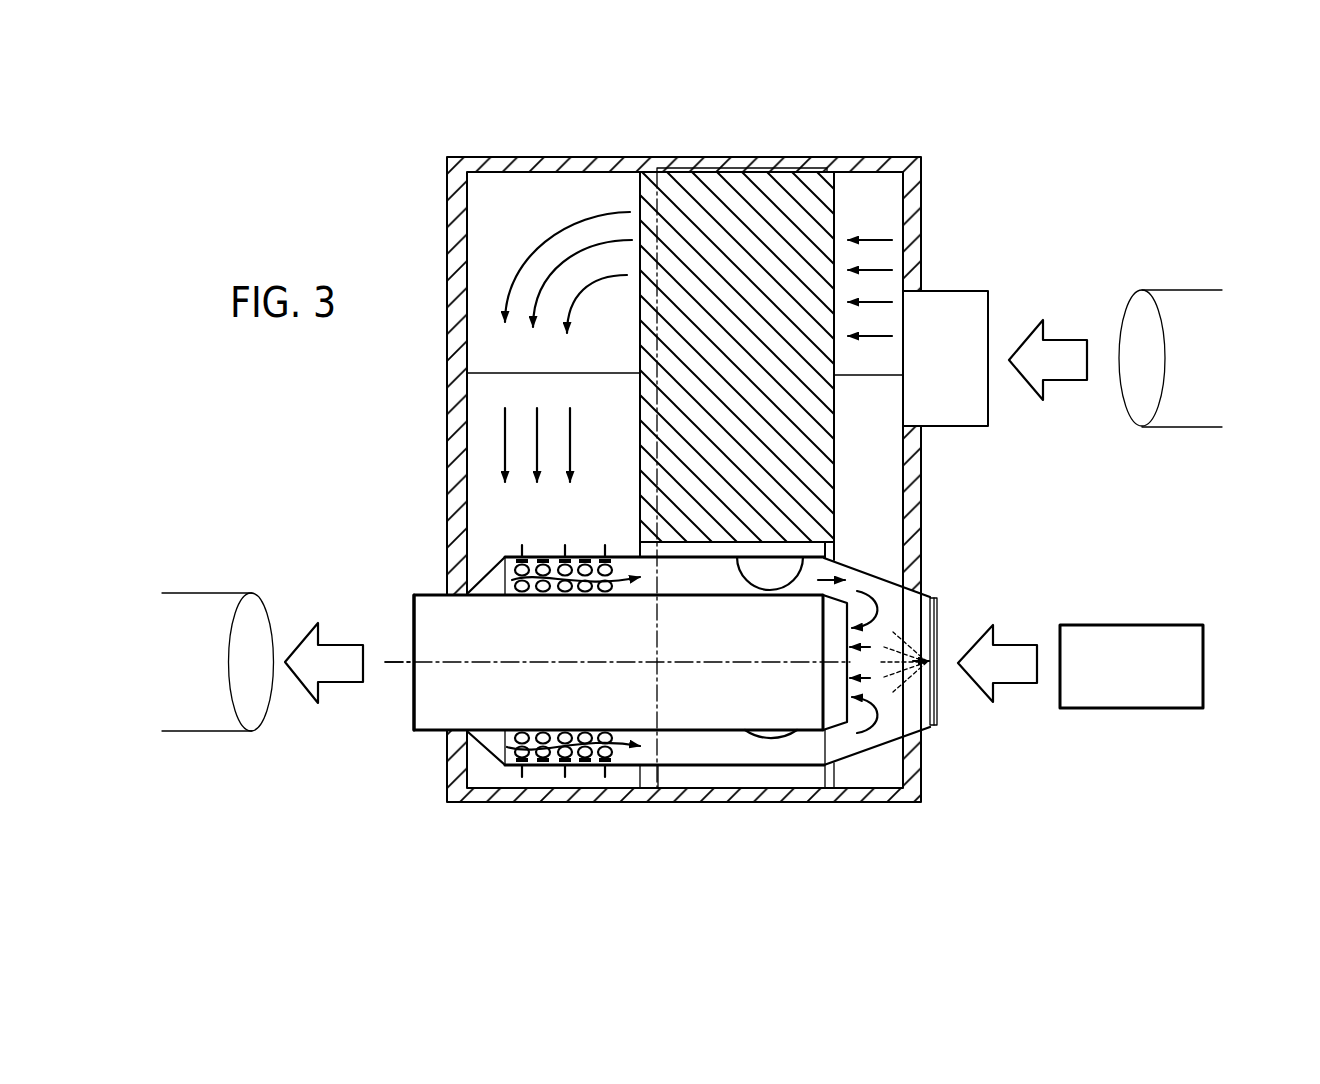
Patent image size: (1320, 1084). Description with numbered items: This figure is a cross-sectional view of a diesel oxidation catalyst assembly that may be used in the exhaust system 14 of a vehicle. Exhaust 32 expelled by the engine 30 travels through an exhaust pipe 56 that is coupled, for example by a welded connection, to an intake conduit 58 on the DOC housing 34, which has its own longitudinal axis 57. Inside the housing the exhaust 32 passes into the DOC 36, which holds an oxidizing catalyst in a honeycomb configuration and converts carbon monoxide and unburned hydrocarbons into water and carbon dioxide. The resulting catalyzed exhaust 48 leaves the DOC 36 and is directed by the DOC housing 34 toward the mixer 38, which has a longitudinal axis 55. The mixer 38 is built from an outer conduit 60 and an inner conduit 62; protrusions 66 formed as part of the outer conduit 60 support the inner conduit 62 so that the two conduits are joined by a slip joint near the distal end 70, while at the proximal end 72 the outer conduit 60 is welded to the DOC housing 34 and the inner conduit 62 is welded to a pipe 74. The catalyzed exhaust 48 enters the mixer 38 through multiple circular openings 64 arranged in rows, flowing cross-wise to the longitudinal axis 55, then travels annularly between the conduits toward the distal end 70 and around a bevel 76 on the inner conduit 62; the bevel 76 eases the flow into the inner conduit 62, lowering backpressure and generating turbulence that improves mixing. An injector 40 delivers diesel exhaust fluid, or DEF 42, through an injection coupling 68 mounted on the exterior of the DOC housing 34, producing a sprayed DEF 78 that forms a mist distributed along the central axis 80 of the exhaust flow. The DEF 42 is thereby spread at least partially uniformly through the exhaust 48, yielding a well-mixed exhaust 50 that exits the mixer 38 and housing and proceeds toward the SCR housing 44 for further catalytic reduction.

The exhaust system 14 is at (268, 827).
The engine 30 is at (1258, 330).
The exhaust 32 is at (1067, 338).
The DOC housing 34 is at (921, 803).
The DOC 36 is at (650, 193).
The mixer 38 is at (405, 743).
The injector 40 is at (1134, 625).
The diesel exhaust fluid (DEF) 42 is at (1017, 643).
The SCR housing 44 is at (142, 705).
The catalyzed exhaust 48 is at (550, 240).
The well-mixed exhaust 50 is at (345, 645).
The longitudinal axis 55 is at (398, 665).
The exhaust pipe 56 is at (1173, 290).
The longitudinal axis 57 is at (658, 230).
The intake conduit 58 is at (953, 290).
The outer conduit 60 is at (653, 767).
The inner conduit 62 is at (673, 732).
The openings 64 is at (518, 580).
The protrusions 66 is at (775, 575).
The injection coupling 68 is at (943, 622).
The distal end 70 is at (835, 600).
The proximal end 72 is at (420, 595).
The pipe 74 is at (218, 593).
The bevel 76 is at (860, 746).
The sprayed DEF 78 is at (937, 682).
The central axis 80 is at (708, 660).